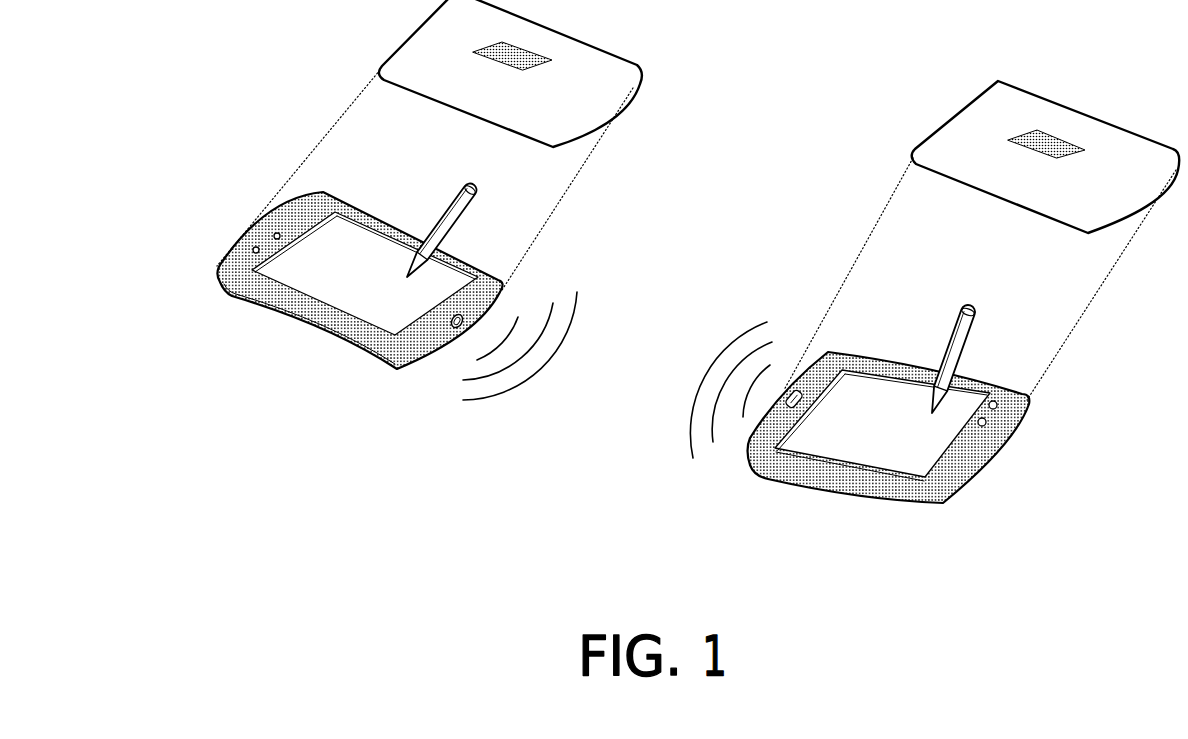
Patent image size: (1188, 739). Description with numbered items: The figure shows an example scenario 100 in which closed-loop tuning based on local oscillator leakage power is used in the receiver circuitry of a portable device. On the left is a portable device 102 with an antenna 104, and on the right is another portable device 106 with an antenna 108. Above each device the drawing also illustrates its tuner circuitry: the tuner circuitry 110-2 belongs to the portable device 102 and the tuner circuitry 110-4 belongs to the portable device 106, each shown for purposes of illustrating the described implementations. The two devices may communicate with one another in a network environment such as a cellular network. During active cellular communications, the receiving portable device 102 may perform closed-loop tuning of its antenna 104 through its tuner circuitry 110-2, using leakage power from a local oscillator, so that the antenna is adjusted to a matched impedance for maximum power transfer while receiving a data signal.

The scenario 100 is at (261, 56).
The portable device 102 is at (282, 358).
The antenna 104 is at (453, 330).
The portable device 106 is at (829, 507).
The antenna 108 is at (802, 391).
The tuner circuitry 110-2 is at (527, 52).
The tuner circuitry 110-4 is at (1062, 142).